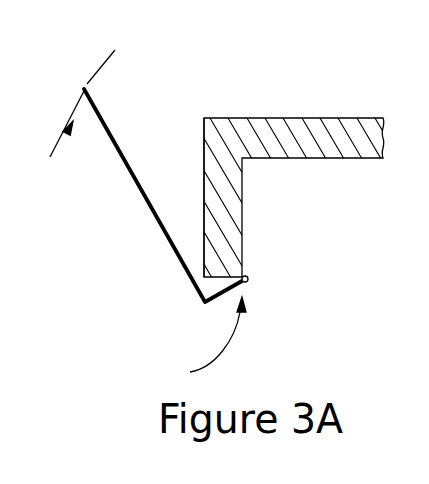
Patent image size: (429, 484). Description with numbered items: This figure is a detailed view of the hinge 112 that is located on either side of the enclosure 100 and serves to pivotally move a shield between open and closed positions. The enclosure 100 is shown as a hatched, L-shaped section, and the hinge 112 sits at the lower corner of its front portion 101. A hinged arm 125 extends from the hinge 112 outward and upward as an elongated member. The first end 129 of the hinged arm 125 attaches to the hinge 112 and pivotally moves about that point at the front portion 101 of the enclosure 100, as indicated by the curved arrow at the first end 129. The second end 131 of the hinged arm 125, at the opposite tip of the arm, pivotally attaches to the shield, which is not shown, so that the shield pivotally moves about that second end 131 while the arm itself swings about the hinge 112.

The enclosure 100 is at (290, 140).
The front portion 101 is at (203, 150).
The hinge 112 is at (248, 283).
The hinged arm 125 is at (175, 252).
The first end 129 is at (199, 340).
The second end 131 is at (74, 121).